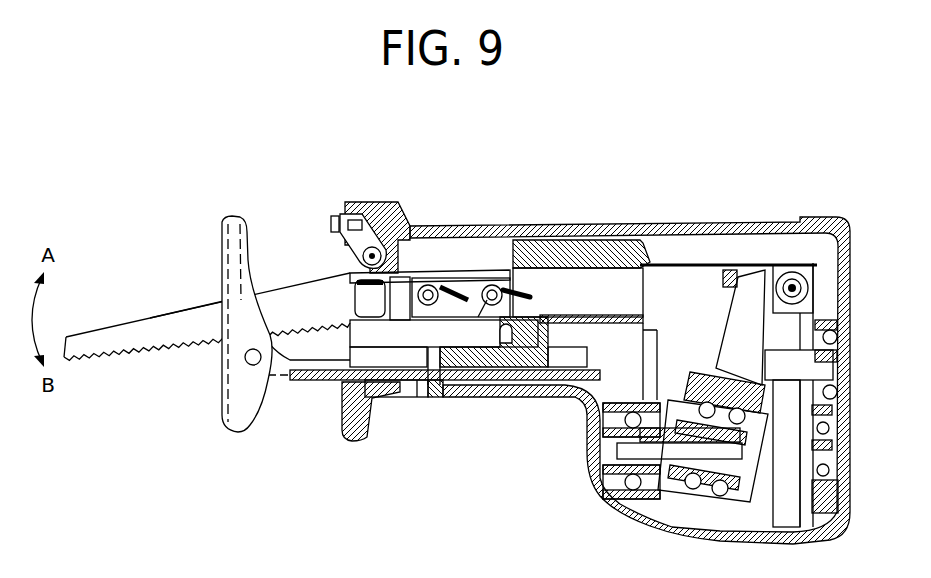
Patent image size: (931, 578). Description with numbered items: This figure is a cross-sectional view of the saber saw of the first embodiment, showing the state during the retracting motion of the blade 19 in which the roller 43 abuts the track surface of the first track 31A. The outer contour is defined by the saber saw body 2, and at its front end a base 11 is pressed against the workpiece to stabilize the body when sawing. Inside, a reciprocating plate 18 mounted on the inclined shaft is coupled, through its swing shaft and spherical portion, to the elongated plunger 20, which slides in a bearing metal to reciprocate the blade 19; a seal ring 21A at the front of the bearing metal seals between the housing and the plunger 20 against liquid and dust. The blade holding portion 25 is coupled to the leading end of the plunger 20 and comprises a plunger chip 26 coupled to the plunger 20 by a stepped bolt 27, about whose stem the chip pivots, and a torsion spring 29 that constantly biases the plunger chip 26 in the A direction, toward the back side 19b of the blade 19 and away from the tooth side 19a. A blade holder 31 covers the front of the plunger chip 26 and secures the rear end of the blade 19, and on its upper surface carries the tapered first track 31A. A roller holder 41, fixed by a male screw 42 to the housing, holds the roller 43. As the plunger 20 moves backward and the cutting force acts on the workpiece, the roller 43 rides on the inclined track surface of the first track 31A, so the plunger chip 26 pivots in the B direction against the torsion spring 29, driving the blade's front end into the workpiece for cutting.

The saber saw body 2 is at (730, 222).
The base 11 is at (229, 418).
The reciprocating plate 18 is at (738, 333).
The blade 19 is at (128, 333).
The tooth side 19a is at (167, 352).
The back side 19b is at (182, 305).
The plunger 20 is at (595, 290).
The seal ring 21A is at (530, 290).
The blade holding portion 25 is at (388, 340).
The plunger chip 26 is at (461, 305).
The stepped bolt 27 is at (488, 282).
The torsion spring 29 is at (581, 238).
The blade holder 31 is at (440, 285).
The first track 31A is at (400, 276).
The roller holder 41 is at (352, 253).
The male screw 42 is at (332, 223).
The roller 43 is at (385, 272).